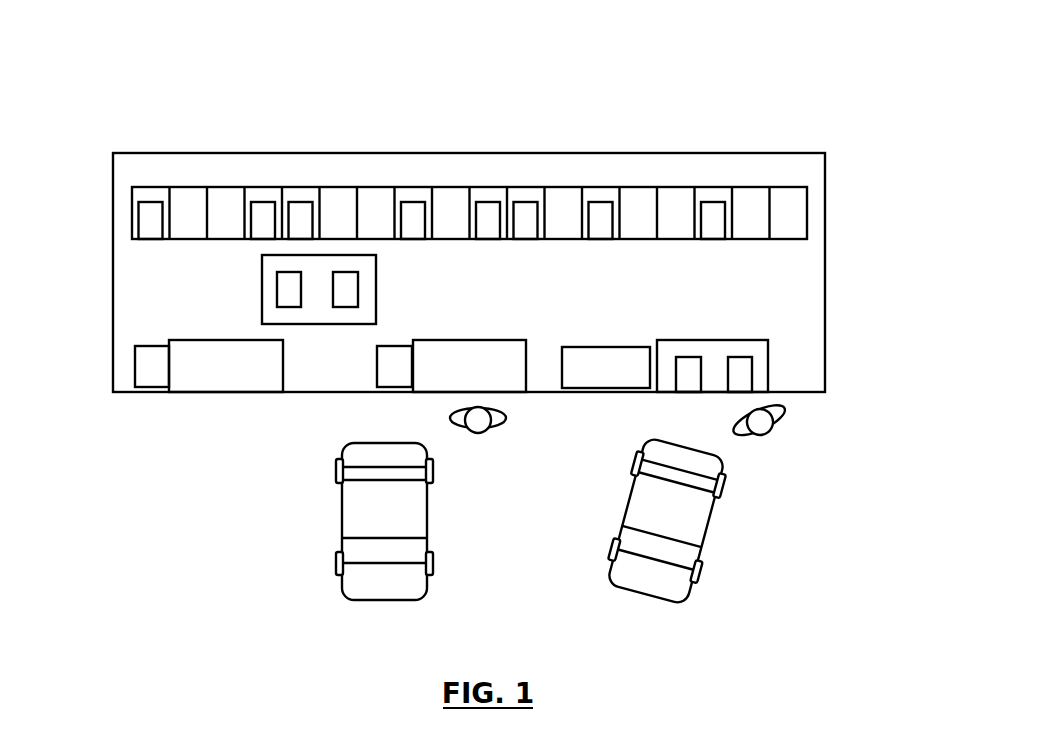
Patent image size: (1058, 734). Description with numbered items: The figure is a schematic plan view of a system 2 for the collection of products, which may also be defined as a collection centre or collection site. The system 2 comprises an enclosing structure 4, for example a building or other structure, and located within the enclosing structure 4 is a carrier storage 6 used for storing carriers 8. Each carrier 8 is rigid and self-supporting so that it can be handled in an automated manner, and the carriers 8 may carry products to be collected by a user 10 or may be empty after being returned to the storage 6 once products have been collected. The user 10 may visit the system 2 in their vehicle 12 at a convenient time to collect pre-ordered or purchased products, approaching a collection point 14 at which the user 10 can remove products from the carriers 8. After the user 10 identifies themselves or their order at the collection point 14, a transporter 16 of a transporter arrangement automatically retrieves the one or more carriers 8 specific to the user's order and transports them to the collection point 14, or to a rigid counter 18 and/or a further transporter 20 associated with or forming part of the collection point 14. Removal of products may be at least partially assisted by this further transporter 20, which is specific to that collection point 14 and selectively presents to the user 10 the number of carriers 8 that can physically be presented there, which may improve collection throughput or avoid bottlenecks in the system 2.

The system 2 is at (816, 95).
The enclosing structure 4 is at (803, 168).
The carrier storage 6 is at (815, 223).
The carriers 8 is at (263, 207).
The user 10 is at (790, 428).
The vehicle 12 is at (722, 553).
The collection point 14 is at (146, 318).
The transporter 16 is at (380, 293).
The rigid counter 18 is at (225, 380).
The further transporter 20 is at (152, 375).